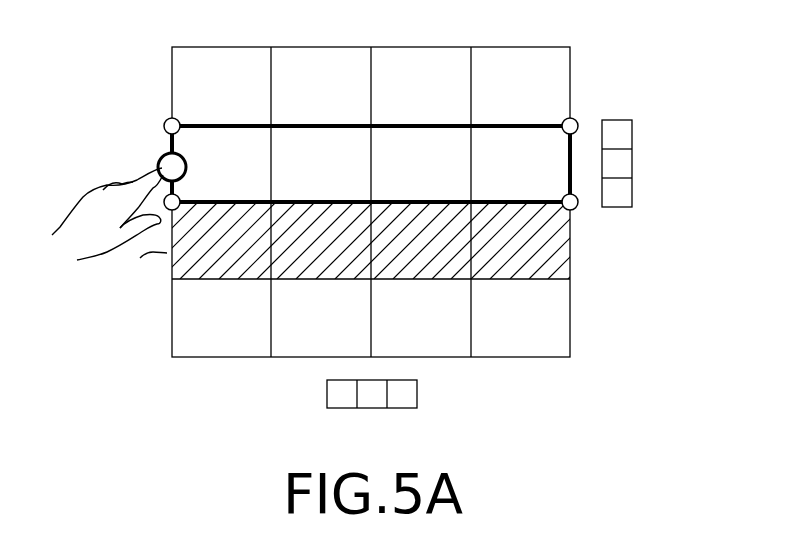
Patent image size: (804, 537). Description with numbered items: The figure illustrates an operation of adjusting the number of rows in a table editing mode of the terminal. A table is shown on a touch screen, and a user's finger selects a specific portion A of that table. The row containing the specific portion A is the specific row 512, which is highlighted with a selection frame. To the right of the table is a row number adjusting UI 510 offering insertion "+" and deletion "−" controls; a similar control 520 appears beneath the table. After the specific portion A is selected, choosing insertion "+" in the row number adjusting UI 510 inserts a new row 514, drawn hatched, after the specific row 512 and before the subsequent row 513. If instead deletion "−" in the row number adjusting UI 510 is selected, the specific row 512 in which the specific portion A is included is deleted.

The row number adjusting UI 510 is at (632, 163).
The specific row 512 is at (172, 142).
The subsequent row 513 is at (178, 318).
The new row 514 is at (178, 252).
The column count adjustment control 520 is at (417, 393).
The specific portion A is at (162, 165).